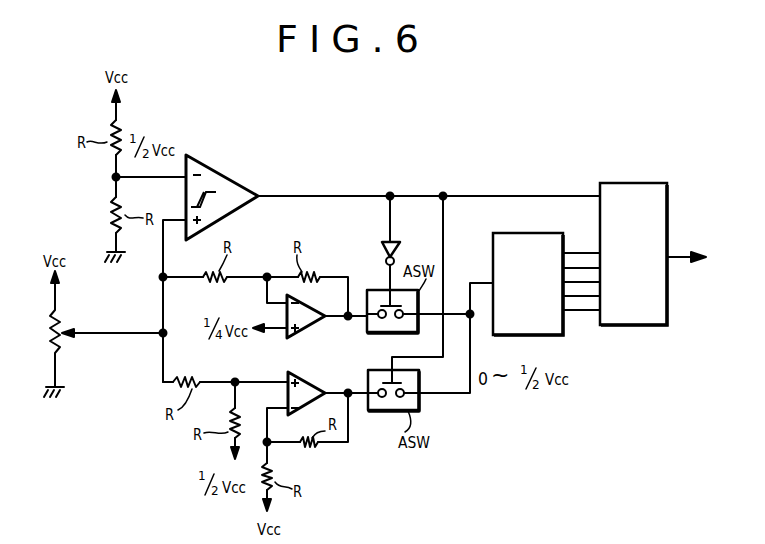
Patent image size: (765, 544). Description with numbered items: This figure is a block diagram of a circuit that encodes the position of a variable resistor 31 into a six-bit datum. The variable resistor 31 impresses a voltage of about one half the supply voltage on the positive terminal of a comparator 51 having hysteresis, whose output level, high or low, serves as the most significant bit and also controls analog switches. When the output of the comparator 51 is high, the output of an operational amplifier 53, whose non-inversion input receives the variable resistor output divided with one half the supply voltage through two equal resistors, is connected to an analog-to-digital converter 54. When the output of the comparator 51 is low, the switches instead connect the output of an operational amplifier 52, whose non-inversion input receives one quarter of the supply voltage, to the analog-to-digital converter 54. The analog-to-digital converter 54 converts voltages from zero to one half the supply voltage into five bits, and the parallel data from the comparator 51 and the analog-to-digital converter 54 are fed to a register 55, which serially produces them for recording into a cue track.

The variable resistor VR 31 is at (80, 340).
The comparator 51 is at (227, 176).
The operational amplifier 52 is at (304, 301).
The operational amplifier 53 is at (310, 382).
The analog-to-digital converter 54 is at (520, 233).
The register 55 is at (628, 183).